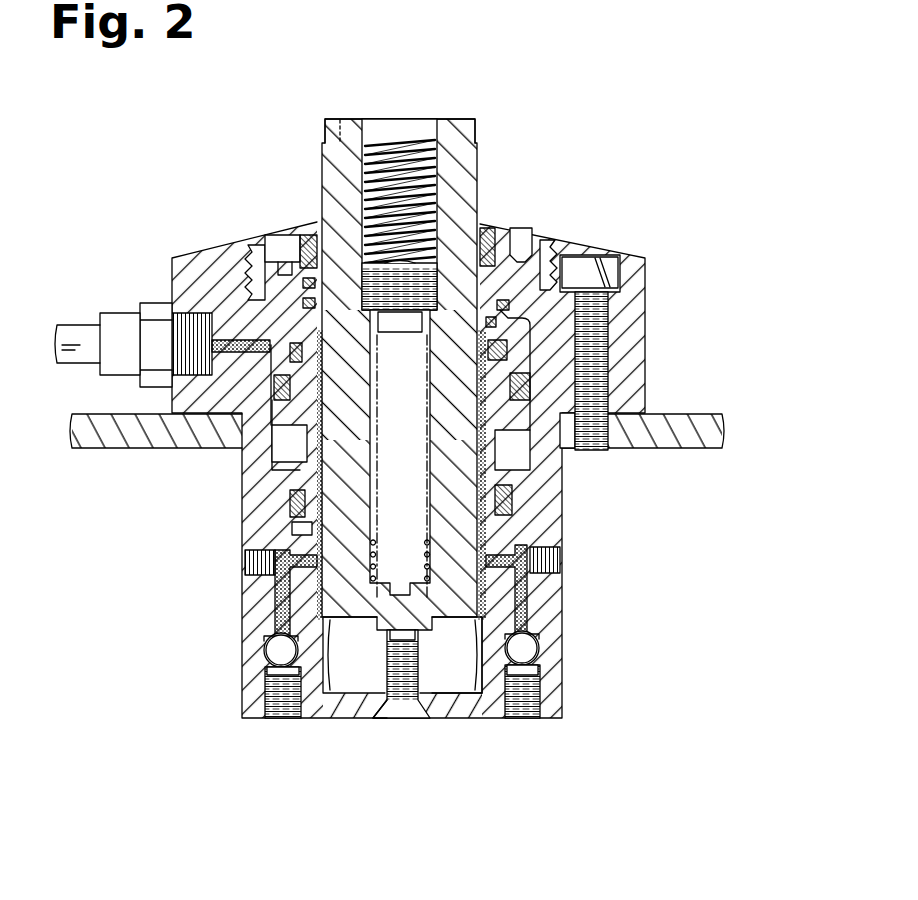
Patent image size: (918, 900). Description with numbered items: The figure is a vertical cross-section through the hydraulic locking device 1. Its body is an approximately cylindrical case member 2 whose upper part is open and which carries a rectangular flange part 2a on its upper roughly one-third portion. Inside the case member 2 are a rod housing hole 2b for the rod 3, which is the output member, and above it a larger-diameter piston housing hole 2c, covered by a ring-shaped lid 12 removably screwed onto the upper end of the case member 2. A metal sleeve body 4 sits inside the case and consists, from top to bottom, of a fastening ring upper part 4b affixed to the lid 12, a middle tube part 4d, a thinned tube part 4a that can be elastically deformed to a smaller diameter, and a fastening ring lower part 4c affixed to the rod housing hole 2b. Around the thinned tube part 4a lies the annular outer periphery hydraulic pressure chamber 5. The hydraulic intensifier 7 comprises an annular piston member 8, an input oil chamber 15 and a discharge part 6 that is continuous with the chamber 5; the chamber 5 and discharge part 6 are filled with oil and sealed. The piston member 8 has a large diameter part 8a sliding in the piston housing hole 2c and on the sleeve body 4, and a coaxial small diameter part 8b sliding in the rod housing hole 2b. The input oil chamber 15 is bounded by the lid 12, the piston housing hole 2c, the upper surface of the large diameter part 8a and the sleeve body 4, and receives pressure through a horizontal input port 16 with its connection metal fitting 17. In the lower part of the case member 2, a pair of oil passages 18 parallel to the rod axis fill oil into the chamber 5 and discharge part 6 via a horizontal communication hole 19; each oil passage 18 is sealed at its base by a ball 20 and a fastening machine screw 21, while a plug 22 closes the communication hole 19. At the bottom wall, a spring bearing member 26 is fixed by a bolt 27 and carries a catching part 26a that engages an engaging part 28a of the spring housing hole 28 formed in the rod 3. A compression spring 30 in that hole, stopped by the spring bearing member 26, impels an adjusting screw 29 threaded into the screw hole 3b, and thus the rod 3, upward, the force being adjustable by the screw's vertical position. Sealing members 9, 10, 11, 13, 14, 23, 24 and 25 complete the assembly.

The hydraulic locking device 1 is at (660, 93).
The case member 2 is at (565, 640).
The flange part 2a is at (630, 380).
The rod housing hole 2b is at (320, 500).
The piston housing hole 2c is at (283, 428).
The rod 3 is at (477, 153).
The screw hole 3b is at (388, 165).
The sleeve body 4 is at (464, 370).
The thinned tube part 4a is at (300, 460).
The fastening ring upper part 4b is at (484, 253).
The fastening ring lower part 4c is at (489, 705).
The middle tube part 4d is at (478, 392).
The outer periphery hydraulic pressure chamber 5 is at (300, 496).
The discharge part 6 is at (300, 528).
The hydraulic intensifier 7 is at (240, 325).
The piston member 8 is at (583, 435).
The large diameter part 8a is at (545, 465).
The small diameter part 8b is at (540, 505).
The sealing member 9 is at (608, 352).
The sealing member 10 is at (592, 318).
The sealing member 11 is at (540, 520).
The lid 12 is at (538, 248).
The sealing member 13 is at (562, 284).
The sealing member 14 is at (548, 262).
The input oil chamber 15 is at (272, 300).
The input port 16 is at (268, 332).
The connection metal fitting 17 is at (150, 337).
The oil passage 18 is at (285, 630).
The communication hole 19 is at (280, 594).
The ball 20 is at (277, 652).
The fastening machine screw 21 is at (272, 705).
The plug 22 is at (243, 562).
The sealing member 23 is at (300, 245).
The sealing member 24 is at (280, 258).
The sealing member 25 is at (326, 695).
The spring bearing member 26 is at (424, 712).
The catching part 26a is at (370, 712).
The bolt 27 is at (398, 710).
The spring housing hole 28 is at (421, 485).
The engaging part 28a is at (458, 705).
The adjusting screw 29 is at (420, 278).
The compression spring 30 is at (376, 436).